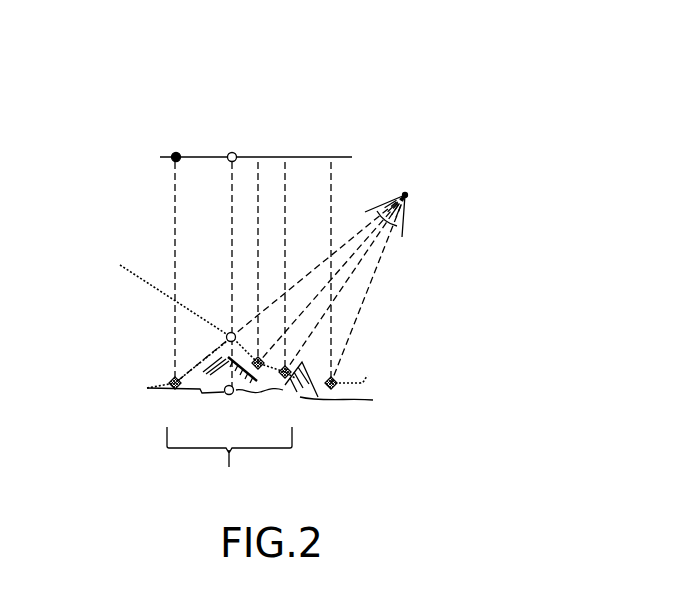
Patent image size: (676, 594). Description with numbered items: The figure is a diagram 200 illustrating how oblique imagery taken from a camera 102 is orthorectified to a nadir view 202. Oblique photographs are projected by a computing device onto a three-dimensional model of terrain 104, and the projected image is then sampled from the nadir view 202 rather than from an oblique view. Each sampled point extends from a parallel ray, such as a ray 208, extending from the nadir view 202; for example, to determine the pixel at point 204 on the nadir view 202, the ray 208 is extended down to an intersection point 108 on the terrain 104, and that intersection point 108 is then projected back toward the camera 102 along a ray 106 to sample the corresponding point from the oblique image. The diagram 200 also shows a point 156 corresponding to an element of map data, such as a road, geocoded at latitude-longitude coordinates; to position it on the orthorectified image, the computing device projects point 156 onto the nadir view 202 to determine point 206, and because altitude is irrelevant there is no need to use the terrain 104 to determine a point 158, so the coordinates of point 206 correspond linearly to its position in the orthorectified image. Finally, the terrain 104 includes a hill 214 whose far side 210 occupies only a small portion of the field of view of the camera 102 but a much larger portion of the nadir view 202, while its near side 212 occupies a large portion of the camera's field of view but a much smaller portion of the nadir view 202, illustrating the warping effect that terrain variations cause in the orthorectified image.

The diagram 200 is at (462, 73).
The nadir view 202 is at (305, 157).
The point 204 is at (176, 157).
The point 206 is at (233, 157).
The ray 208 is at (175, 205).
The camera 102 is at (406, 195).
The ray 106 is at (357, 233).
The point 158 is at (155, 292).
The far side 210 is at (203, 355).
The near side 212 is at (274, 362).
The point 108 is at (175, 383).
The terrain 104 is at (360, 383).
The point 156 is at (229, 390).
The hill 214 is at (242, 430).